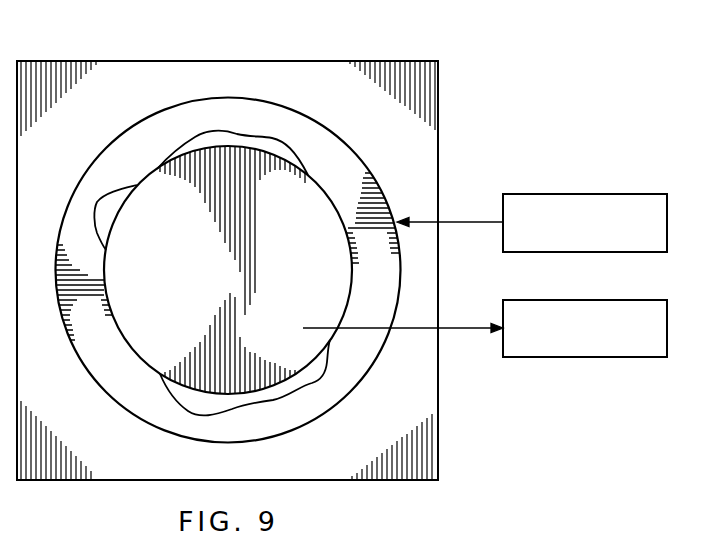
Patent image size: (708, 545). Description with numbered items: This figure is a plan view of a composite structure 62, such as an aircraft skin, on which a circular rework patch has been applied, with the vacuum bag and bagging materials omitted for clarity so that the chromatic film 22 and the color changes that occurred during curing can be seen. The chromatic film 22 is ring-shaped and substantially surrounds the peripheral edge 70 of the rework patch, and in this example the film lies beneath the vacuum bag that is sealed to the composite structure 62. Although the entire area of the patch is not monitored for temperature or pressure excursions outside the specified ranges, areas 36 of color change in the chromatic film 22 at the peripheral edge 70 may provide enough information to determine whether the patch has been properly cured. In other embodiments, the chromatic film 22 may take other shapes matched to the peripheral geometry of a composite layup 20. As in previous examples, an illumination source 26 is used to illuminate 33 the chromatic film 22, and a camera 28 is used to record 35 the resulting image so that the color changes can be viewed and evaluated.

The composite structure 62 is at (229, 66).
The chromatic film 22 is at (145, 412).
The composite layup 20 is at (137, 335).
The peripheral edge 70 is at (147, 157).
The areas of color change 36 is at (111, 206).
The illuminate 33 is at (465, 222).
The record 35 is at (465, 331).
The illumination source 26 is at (585, 194).
The camera 28 is at (585, 358).